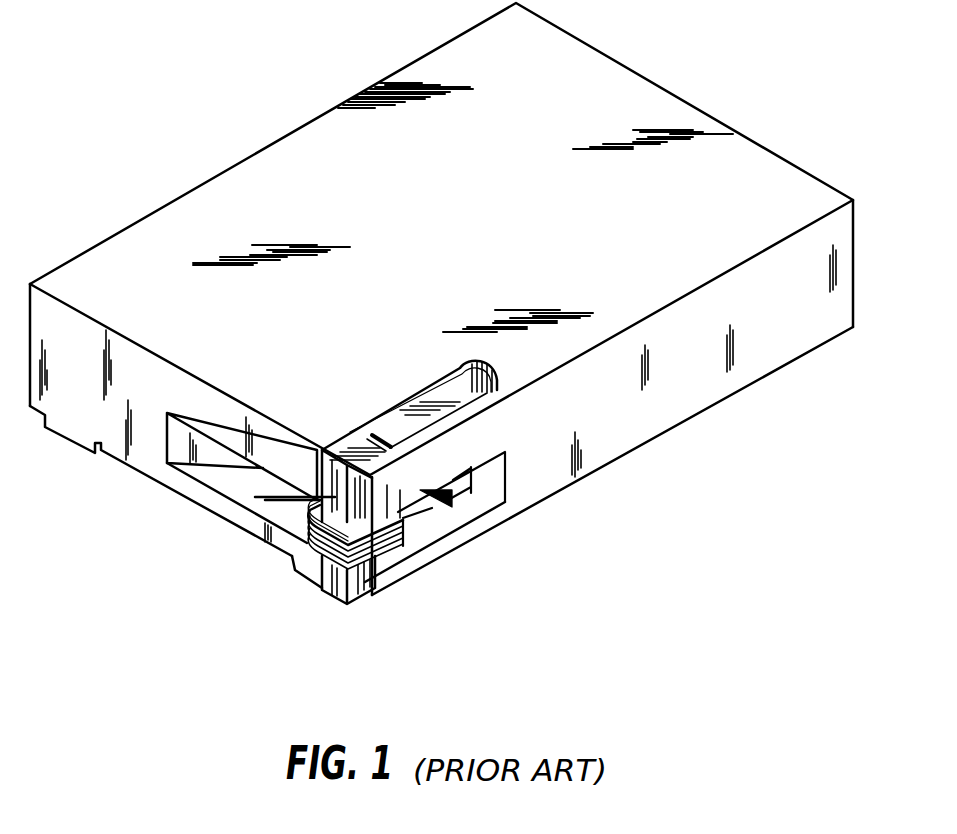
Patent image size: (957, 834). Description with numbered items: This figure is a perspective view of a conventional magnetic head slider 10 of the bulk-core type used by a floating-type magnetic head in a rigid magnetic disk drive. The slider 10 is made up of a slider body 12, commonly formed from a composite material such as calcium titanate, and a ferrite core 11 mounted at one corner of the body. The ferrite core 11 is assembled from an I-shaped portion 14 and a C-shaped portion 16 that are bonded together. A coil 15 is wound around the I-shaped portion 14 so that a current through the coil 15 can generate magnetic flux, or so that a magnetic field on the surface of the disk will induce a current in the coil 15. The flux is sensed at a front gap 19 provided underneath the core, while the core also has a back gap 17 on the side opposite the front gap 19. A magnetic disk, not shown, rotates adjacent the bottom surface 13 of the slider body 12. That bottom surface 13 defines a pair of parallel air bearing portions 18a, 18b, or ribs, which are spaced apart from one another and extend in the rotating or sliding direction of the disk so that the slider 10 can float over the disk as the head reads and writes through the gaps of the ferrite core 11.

The magnetic head slider 10 is at (438, 326).
The ferrite core 11 is at (409, 422).
The slider body 12 is at (613, 437).
The bottom surface 13 is at (167, 488).
The I-shaped portion 14 is at (333, 583).
The coil 15 is at (385, 547).
The C-shaped portion 16 is at (463, 493).
The back gap 17 is at (379, 425).
The air bearing portion 18a is at (62, 429).
The air bearing portion 18b is at (298, 570).
The front gap 19 is at (435, 567).